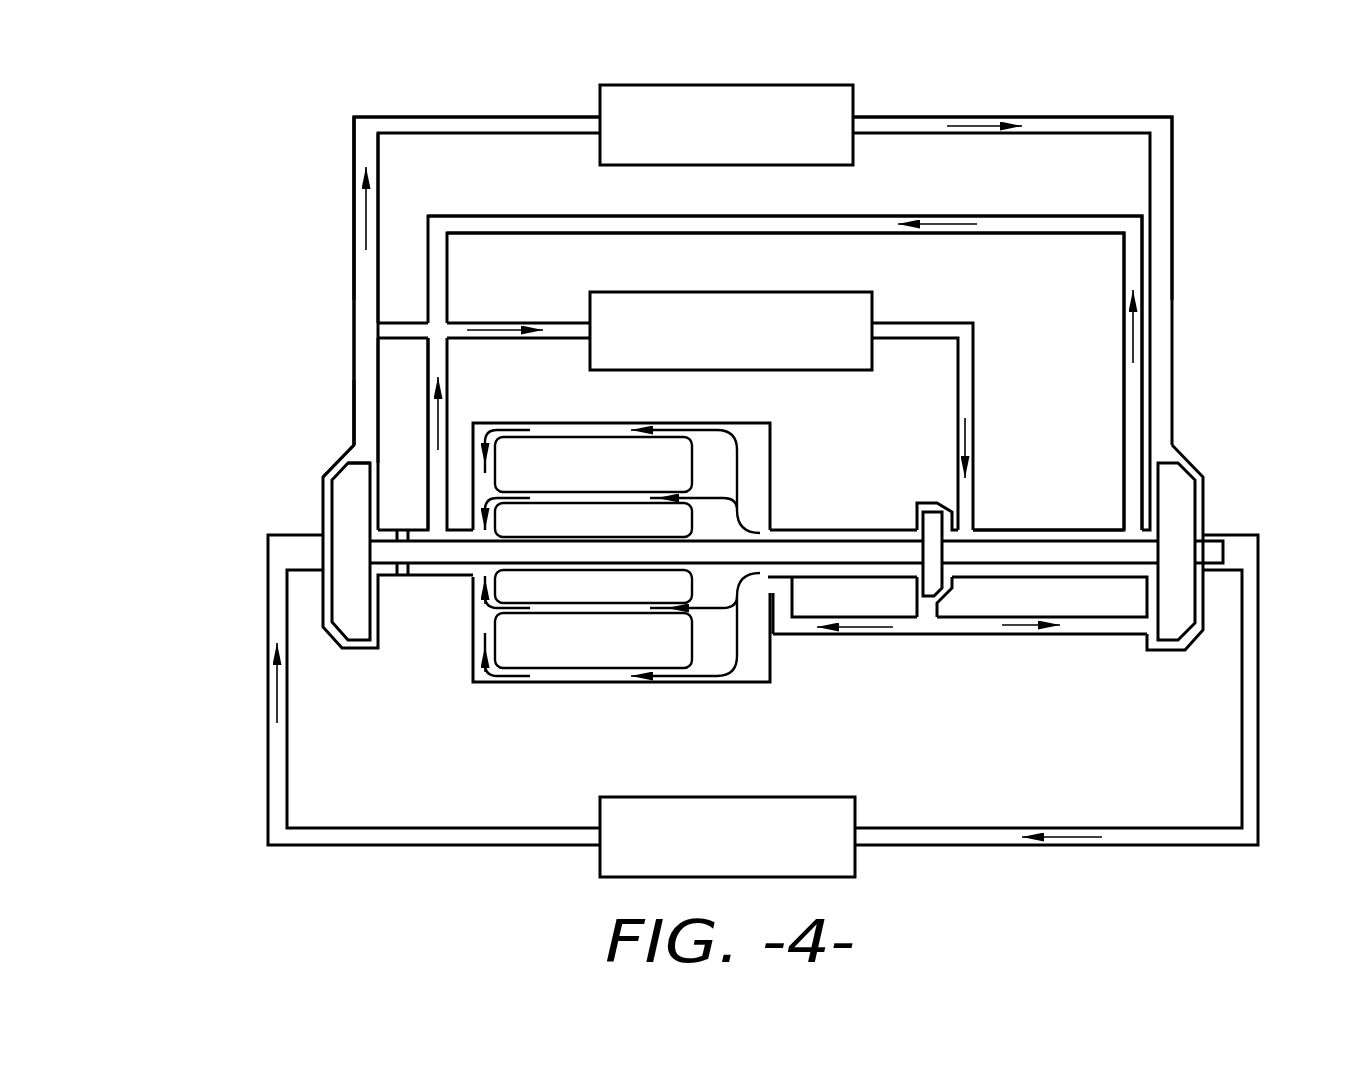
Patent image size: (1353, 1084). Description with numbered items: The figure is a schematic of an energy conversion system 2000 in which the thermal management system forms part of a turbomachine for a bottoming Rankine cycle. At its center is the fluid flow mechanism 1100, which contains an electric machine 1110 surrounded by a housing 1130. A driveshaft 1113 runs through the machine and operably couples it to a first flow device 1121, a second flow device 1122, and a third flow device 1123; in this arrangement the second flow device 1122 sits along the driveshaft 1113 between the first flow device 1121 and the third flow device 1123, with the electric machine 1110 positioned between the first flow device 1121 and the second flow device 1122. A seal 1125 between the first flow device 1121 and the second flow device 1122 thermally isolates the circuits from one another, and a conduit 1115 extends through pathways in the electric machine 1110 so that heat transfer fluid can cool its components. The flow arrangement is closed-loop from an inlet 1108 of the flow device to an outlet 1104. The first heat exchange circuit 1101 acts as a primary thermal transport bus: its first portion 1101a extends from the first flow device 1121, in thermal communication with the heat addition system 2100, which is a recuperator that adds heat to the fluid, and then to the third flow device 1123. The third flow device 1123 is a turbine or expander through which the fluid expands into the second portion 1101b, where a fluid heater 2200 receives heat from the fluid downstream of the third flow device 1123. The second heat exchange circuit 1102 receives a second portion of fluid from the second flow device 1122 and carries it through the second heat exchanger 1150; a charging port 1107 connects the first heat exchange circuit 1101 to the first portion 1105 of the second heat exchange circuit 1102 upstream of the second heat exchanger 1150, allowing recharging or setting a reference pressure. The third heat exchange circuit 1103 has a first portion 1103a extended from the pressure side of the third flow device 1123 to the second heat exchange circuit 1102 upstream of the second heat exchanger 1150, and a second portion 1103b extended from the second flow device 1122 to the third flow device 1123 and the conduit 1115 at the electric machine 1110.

The energy conversion system 2000 is at (271, 172).
The fluid flow mechanism 1100 is at (223, 572).
The heat addition system 2100 is at (797, 83).
The fluid heater 2200 is at (780, 797).
The second heat exchanger 1150 is at (810, 292).
The first heat exchange circuit 1101 is at (476, 102).
The first portion of the first heat exchange circuit 1101a is at (437, 137).
The second portion of the first heat exchange circuit 1101b is at (970, 825).
The third heat exchange circuit 1103 is at (1006, 194).
The first portion of the third heat exchange circuit 1103a is at (843, 215).
The second portion of the third heat exchange circuit 1103b is at (1028, 637).
The second heat exchange circuit 1102 is at (975, 377).
The outlet 1104 is at (356, 426).
The first portion of the second heat exchange circuit 1105 is at (450, 372).
The charging port 1107 is at (397, 320).
The inlet 1108 is at (295, 538).
The electric machine 1110 is at (555, 657).
The driveshaft 1113 is at (1098, 550).
The conduit 1115 is at (692, 610).
The first flow device 1121 is at (362, 650).
The second flow device 1122 is at (932, 520).
The third flow device 1123 is at (1187, 648).
The seal 1125 is at (402, 568).
The housing 1130 is at (773, 658).